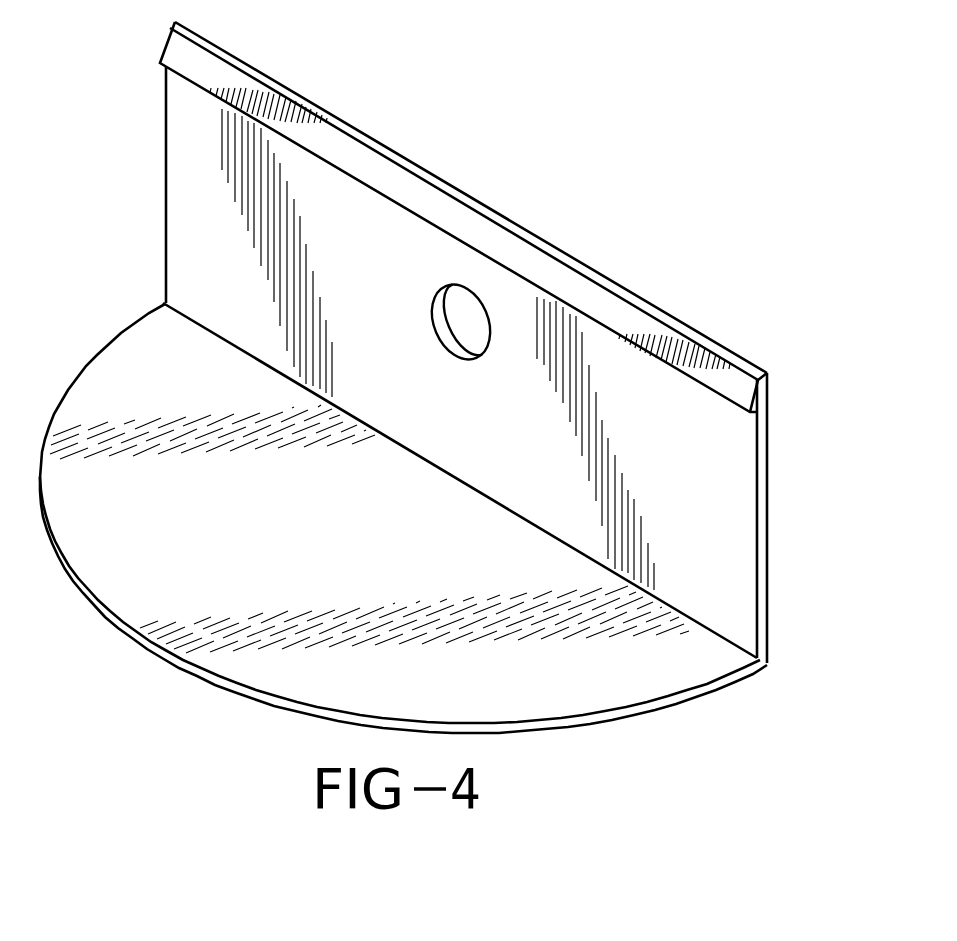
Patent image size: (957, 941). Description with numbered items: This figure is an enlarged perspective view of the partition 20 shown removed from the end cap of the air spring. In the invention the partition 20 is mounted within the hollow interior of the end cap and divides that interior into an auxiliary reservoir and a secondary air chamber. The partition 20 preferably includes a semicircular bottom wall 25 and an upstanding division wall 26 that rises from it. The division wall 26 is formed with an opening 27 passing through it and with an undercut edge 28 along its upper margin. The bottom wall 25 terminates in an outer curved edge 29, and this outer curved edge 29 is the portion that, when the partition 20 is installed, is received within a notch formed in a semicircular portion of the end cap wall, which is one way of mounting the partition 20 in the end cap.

The partition 20 is at (581, 262).
The semicircular bottom wall 25 is at (122, 383).
The division wall 26 is at (738, 492).
The opening 27 is at (457, 351).
The undercut edge 28 is at (193, 85).
The outer curved edge 29 is at (622, 712).